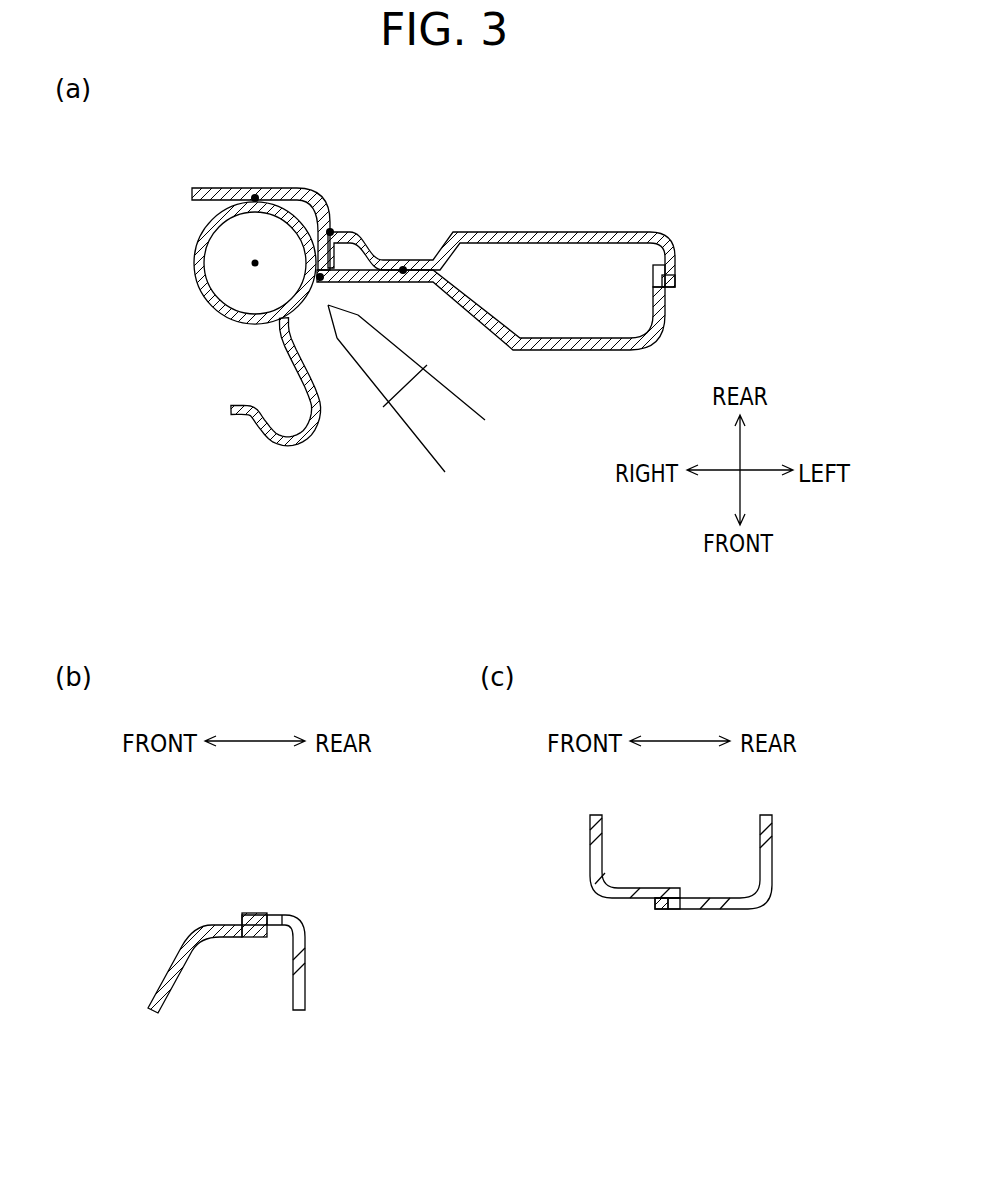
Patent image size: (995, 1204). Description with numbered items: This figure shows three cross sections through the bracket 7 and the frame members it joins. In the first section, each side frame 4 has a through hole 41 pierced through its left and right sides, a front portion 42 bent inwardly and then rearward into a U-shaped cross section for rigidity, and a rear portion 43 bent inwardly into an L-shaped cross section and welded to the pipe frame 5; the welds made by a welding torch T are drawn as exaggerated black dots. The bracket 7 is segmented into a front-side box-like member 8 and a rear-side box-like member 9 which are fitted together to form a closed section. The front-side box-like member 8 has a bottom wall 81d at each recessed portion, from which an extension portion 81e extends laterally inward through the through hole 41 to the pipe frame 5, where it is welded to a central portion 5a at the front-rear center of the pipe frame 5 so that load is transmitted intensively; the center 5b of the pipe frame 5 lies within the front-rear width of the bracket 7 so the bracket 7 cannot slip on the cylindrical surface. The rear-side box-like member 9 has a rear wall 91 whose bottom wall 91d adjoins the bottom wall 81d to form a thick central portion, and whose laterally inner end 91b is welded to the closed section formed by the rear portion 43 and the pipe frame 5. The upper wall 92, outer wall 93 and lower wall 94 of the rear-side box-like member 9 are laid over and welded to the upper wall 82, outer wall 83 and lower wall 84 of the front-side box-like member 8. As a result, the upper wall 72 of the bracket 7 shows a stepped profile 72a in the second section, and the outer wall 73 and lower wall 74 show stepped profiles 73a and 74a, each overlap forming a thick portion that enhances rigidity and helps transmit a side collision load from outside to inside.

The side frame 4 is at (307, 444).
The pipe frame 5 is at (202, 229).
The central portion 5a is at (338, 236).
The center 5b is at (253, 263).
The bracket 7 is at (651, 214).
The front-side box-like member 8 is at (590, 362).
The rear-side box-like member 9 is at (592, 222).
The through hole 41 is at (280, 339).
The front portion 42 is at (265, 440).
The rear portion 43 is at (268, 188).
The upper wall 72 is at (298, 842).
The stepped profile 72a is at (242, 920).
The outer wall 73 is at (758, 248).
The stepped profile 73a is at (670, 290).
The lower wall 74 is at (723, 972).
The stepped profile 74a is at (653, 903).
The bottom wall 81d is at (395, 282).
The extension portion 81e is at (318, 290).
The upper wall 82 is at (250, 914).
The outer wall 83 is at (661, 276).
The lower wall 84 is at (667, 903).
The rear wall 91 is at (512, 232).
The laterally inner end 91b is at (331, 230).
The bottom wall 91d is at (405, 268).
The upper wall 92 is at (262, 914).
The outer wall 93 is at (671, 265).
The lower wall 94 is at (675, 903).
The welding torch T is at (430, 462).